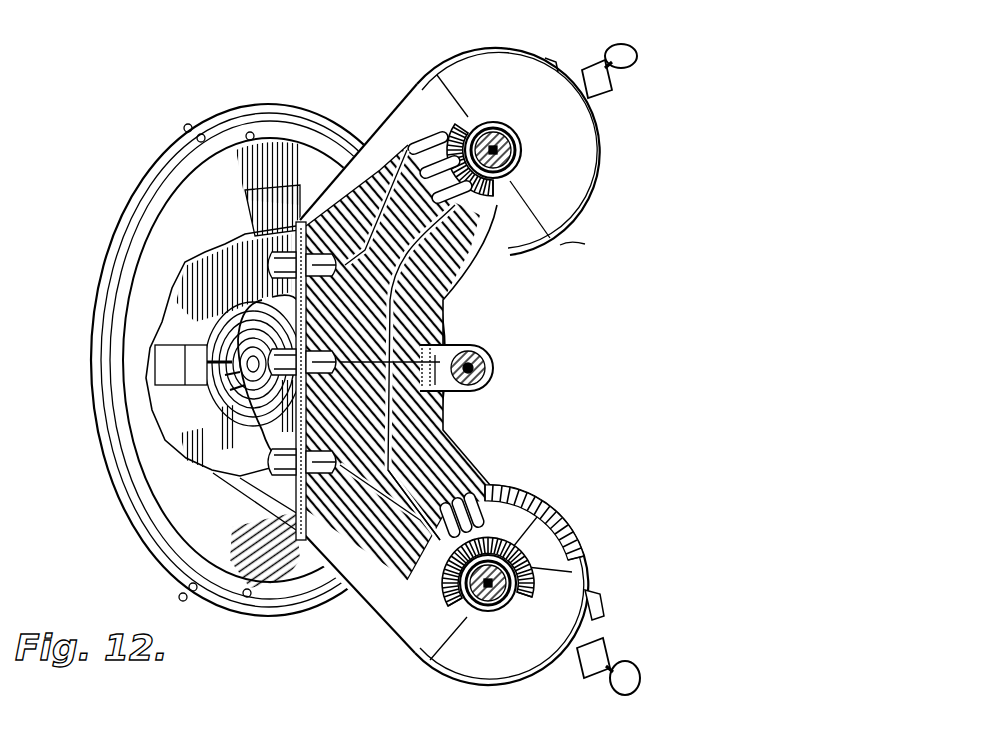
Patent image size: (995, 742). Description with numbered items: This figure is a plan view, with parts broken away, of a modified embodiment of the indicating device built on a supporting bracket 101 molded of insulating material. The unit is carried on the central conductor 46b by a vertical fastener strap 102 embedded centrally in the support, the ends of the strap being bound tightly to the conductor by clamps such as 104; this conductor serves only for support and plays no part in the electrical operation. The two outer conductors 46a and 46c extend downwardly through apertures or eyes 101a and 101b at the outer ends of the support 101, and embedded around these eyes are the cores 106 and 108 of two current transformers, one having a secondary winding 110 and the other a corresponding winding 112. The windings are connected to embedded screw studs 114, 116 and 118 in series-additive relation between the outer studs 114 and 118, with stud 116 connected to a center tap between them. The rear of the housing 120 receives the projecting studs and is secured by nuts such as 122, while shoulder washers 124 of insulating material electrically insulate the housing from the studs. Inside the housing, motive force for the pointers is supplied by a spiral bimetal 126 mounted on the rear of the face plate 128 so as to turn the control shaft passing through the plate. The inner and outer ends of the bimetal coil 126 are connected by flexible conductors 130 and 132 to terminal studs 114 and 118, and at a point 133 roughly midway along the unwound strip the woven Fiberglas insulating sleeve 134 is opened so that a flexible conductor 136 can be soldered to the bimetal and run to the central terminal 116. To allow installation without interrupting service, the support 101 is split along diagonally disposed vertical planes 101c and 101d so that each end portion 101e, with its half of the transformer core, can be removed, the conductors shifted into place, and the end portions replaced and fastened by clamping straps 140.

The conductor 46a is at (508, 153).
The central conductor 46b is at (490, 378).
The conductor 46c is at (505, 598).
The supporting bracket 101 is at (446, 289).
The aperture 101a is at (472, 122).
The aperture 101b is at (473, 614).
The diagonally disposed vertical plane 101c is at (570, 232).
The diagonally disposed vertical plane 101d is at (434, 670).
The end portion 101e is at (578, 176).
The vertical fastener strap 102 is at (430, 394).
The clamp 104 is at (466, 396).
The core 106 is at (478, 222).
The core 108 is at (420, 582).
The secondary winding 110 is at (421, 372).
The secondary winding 112 is at (414, 505).
The screw stud 114 is at (364, 207).
The screw stud 116 is at (354, 345).
The screw stud 118 is at (344, 465).
The housing 120 is at (152, 158).
The nut 122 is at (292, 262).
The shoulder washer 124 is at (272, 210).
The spiral bimetal 126 is at (215, 348).
The face plate 128 is at (188, 276).
The flexible conductor 130 is at (268, 296).
The flexible conductor 132 is at (261, 550).
The point 133 is at (217, 401).
The woven Fiberglas insulating sleeve 134 is at (214, 388).
The flexible conductor 136 is at (228, 477).
The clamping strap 140 is at (552, 58).